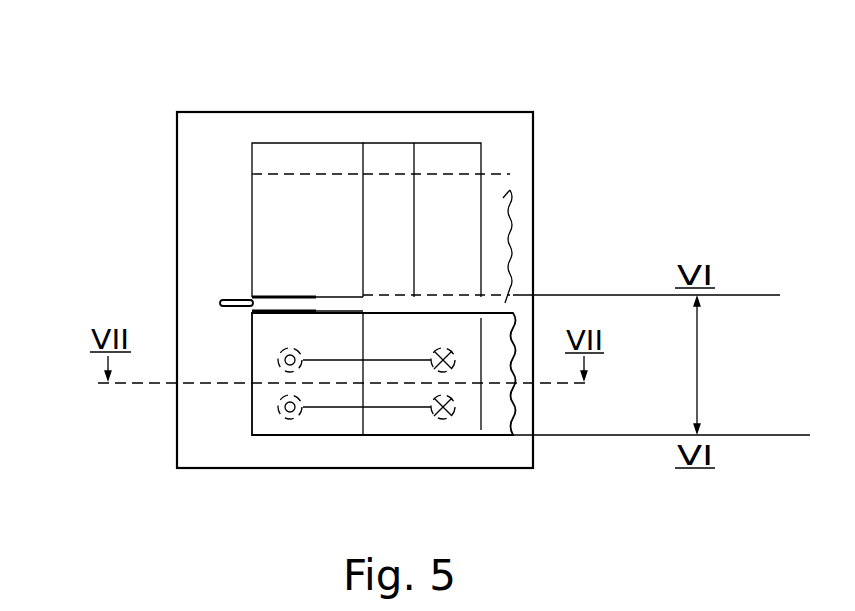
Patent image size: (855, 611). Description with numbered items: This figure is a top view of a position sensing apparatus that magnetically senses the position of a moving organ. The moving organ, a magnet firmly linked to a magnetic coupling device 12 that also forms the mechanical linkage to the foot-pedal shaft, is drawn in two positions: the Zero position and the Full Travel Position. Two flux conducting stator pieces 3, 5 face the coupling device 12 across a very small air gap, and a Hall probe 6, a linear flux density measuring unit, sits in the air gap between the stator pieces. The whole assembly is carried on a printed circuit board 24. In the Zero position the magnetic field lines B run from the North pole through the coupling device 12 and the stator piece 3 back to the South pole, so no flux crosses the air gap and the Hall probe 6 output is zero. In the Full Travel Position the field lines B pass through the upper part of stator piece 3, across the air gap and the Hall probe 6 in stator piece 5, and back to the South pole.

The printed circuit board 24 is at (352, 112).
The flux conducting stator piece 5 is at (278, 162).
The flux conducting stator piece 3 is at (458, 162).
The Hall probe 6 is at (252, 297).
The magnetic coupling device 12 is at (503, 198).
The magnetic field lines B is at (270, 418).